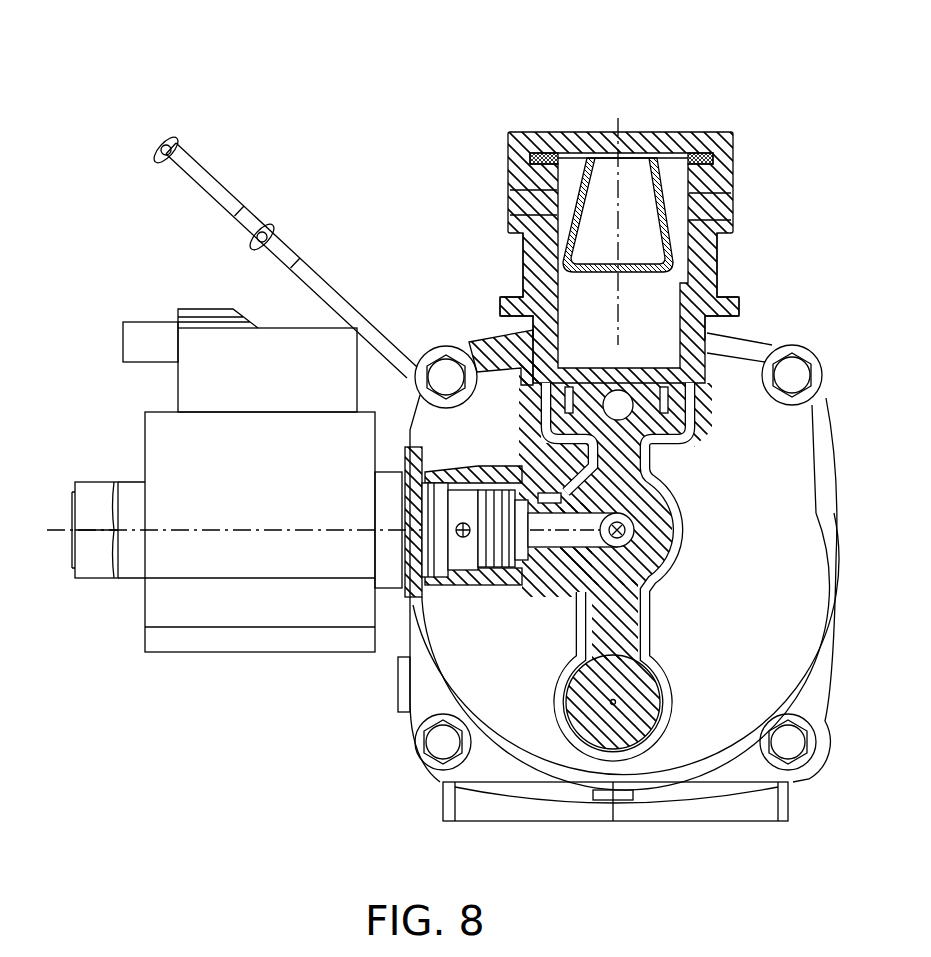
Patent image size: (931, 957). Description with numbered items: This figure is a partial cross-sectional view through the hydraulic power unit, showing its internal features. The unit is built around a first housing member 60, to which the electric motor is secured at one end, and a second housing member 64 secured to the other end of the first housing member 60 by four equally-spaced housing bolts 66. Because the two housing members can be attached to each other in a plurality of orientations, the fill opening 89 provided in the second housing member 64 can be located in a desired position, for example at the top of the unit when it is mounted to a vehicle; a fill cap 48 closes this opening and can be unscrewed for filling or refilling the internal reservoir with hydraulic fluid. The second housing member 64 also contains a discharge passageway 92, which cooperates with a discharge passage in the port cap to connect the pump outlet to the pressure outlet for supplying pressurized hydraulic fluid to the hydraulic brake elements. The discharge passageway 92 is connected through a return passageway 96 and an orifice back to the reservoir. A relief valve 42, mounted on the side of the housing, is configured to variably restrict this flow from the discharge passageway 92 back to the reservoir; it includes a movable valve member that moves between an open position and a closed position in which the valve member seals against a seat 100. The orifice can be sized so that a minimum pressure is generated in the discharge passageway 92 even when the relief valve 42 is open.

The relief valve 42 is at (241, 613).
The fill cap 48 is at (728, 160).
The first housing member 60 is at (817, 437).
The second housing member 64 is at (703, 300).
The housing bolts 66 is at (792, 375).
The fill opening 89 is at (662, 165).
The discharge passageway 92 is at (606, 540).
The return passageway 96 is at (549, 495).
The seat 100 is at (540, 492).